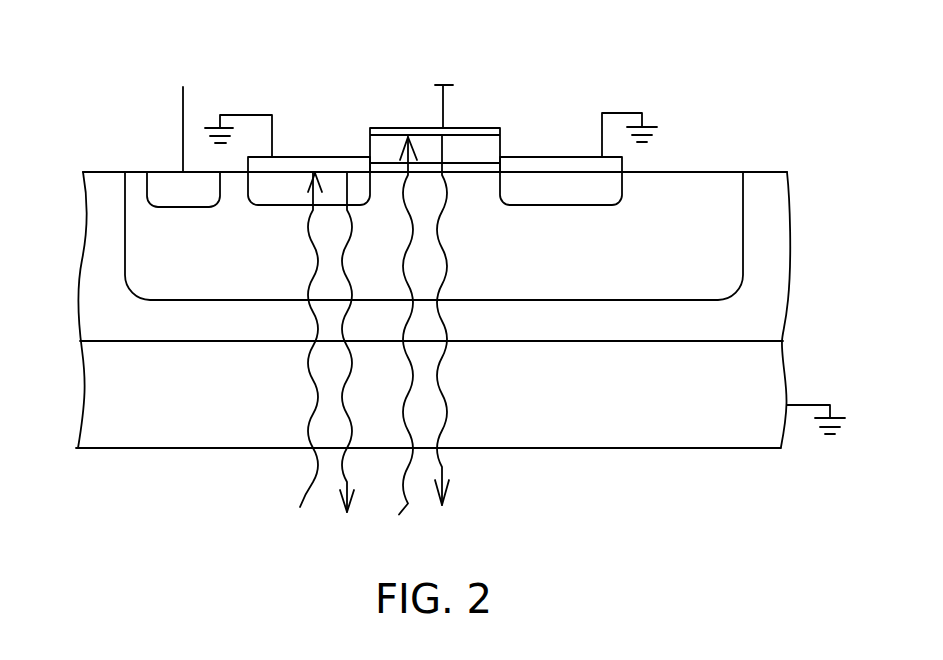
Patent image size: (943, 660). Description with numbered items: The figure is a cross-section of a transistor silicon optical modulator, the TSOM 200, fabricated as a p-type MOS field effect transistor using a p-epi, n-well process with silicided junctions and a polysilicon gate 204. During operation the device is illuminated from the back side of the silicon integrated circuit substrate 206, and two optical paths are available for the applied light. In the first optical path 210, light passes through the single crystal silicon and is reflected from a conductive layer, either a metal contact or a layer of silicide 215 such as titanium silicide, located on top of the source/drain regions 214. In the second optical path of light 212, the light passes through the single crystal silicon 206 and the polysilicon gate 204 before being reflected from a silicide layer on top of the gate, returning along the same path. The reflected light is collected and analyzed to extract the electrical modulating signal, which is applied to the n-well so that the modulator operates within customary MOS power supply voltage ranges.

The TSOM 200 is at (748, 107).
The polysilicon gate 204 is at (495, 142).
The silicon integrated circuit substrate 206 is at (145, 437).
The first optical path 210 is at (302, 355).
The second optical path of light 212 is at (409, 340).
The source/drain regions 214 is at (297, 177).
The silicide 215 is at (558, 163).